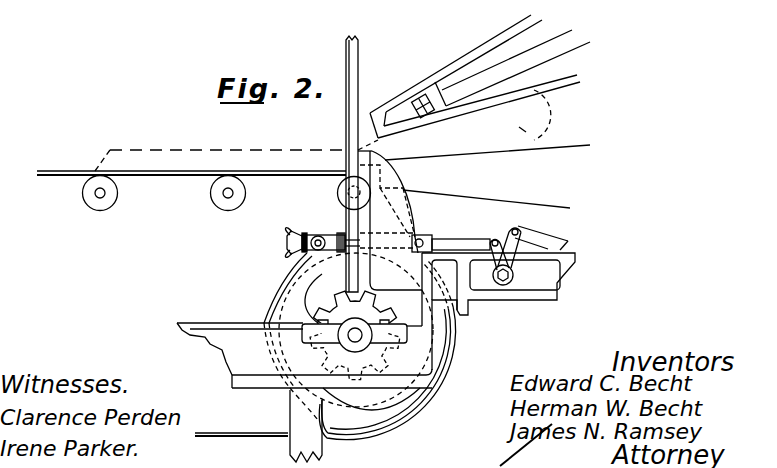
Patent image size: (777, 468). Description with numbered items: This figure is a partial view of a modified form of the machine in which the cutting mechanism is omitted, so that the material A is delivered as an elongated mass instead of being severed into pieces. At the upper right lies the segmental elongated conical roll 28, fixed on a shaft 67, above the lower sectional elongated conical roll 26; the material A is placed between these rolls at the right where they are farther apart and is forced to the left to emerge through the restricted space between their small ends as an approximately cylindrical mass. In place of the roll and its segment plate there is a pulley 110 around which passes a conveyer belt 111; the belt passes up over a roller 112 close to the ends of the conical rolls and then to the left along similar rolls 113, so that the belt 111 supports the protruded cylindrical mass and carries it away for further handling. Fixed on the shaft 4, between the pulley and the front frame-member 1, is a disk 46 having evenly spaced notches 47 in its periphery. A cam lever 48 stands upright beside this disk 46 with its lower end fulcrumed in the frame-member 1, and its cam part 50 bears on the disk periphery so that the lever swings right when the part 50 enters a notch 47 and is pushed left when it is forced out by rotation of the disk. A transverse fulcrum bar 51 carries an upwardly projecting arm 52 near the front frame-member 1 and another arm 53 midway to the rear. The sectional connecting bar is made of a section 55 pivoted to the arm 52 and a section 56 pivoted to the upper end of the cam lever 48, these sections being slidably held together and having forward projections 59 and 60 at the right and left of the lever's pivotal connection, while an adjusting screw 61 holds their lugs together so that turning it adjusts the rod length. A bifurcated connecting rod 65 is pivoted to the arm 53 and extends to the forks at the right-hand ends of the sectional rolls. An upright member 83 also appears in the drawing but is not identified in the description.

The front frame-member 1 is at (251, 384).
The shaft 4 is at (356, 341).
The lower sectional elongated conical roll 26 is at (538, 203).
The segmental elongated conical roll 28 is at (466, 59).
The disk 46 is at (373, 313).
The notches 47 is at (338, 298).
The cam lever 48 is at (273, 298).
The cam part 50 is at (312, 323).
The transverse fulcrum bar 51 is at (502, 285).
The upwardly projecting arm 52 is at (493, 236).
The upwardly projecting arm 53 is at (513, 229).
The section 55 is at (448, 238).
The section 56 is at (363, 234).
The forward projection 59 is at (338, 233).
The forward projection 60 is at (305, 231).
The adjusting screw 61 is at (287, 242).
The bifurcated connecting rod 65 is at (537, 239).
The shaft 67 is at (560, 47).
The post 83 is at (352, 92).
The pulley 110 is at (380, 418).
The conveyer belt 111 is at (275, 173).
The roller 112 is at (340, 193).
The rolls 113 is at (108, 203).
The material A is at (540, 113).